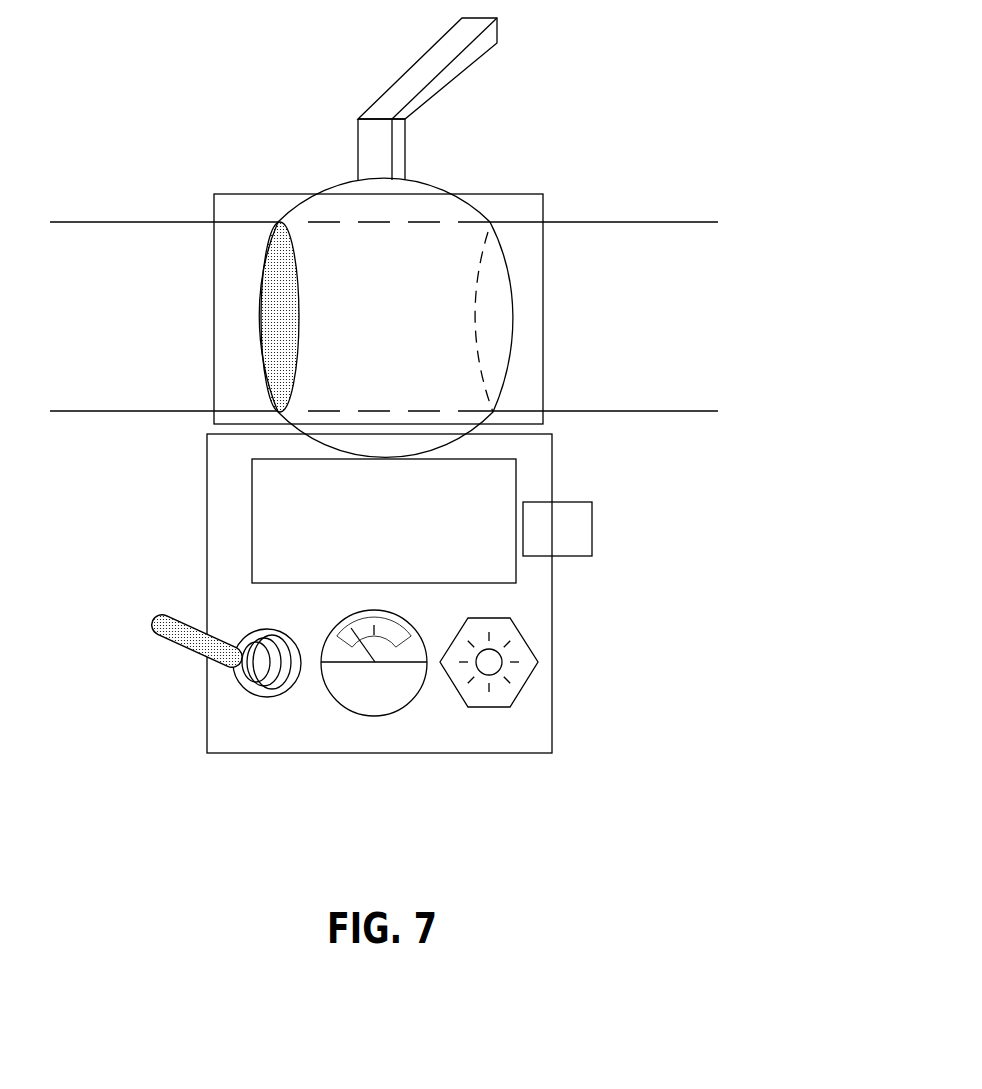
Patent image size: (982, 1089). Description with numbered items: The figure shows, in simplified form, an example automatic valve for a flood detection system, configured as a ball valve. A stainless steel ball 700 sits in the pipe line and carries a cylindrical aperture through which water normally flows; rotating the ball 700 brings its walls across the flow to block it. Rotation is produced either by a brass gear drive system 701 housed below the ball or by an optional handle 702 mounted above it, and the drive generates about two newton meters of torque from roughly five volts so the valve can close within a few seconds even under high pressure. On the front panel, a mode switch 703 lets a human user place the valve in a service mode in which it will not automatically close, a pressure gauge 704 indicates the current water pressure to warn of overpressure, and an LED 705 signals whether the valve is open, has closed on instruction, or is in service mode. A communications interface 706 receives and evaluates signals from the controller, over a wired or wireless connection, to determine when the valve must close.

The ball 700 is at (466, 187).
The gear drive system 701 is at (384, 521).
The handle 702 is at (524, 42).
The mode switch 703 is at (258, 724).
The pressure gauge 704 is at (381, 745).
The LED 705 is at (500, 730).
The communications interface 706 is at (612, 535).